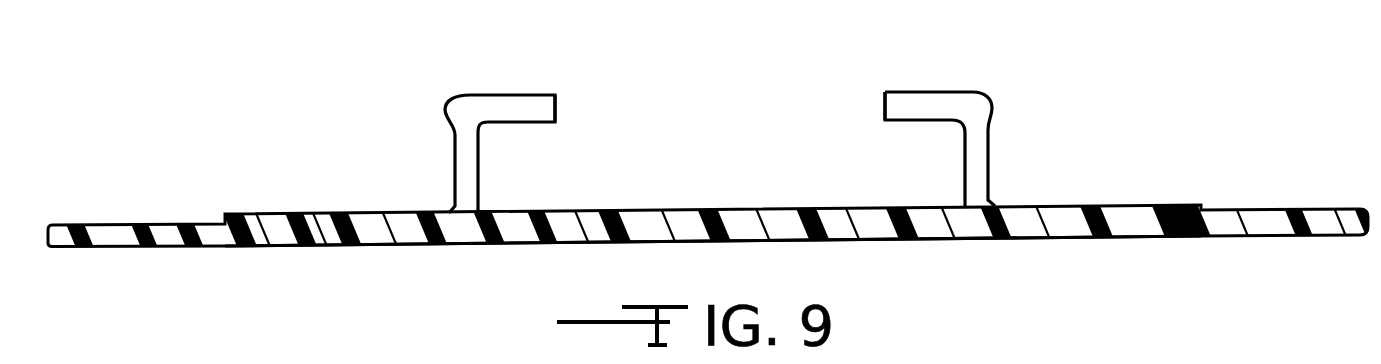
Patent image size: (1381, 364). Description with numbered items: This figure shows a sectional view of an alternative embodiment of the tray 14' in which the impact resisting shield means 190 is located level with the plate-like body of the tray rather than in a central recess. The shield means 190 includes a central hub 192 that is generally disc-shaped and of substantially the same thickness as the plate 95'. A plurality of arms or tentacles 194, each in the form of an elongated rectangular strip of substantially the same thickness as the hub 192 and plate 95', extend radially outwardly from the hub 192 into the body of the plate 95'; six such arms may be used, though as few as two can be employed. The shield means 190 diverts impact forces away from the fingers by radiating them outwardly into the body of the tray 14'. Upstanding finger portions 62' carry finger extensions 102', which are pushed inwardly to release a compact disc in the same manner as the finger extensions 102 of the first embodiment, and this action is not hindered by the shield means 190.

The tray 14' is at (708, 194).
The terminal 62' is at (757, 123).
The finger extensions 102 is at (857, 76).
The finger extensions 102' is at (597, 90).
The impact resistant shield means 190 is at (692, 195).
The central hub 192 is at (795, 236).
The arms or tentacles 194 is at (502, 232).
The plate 95' is at (717, 262).